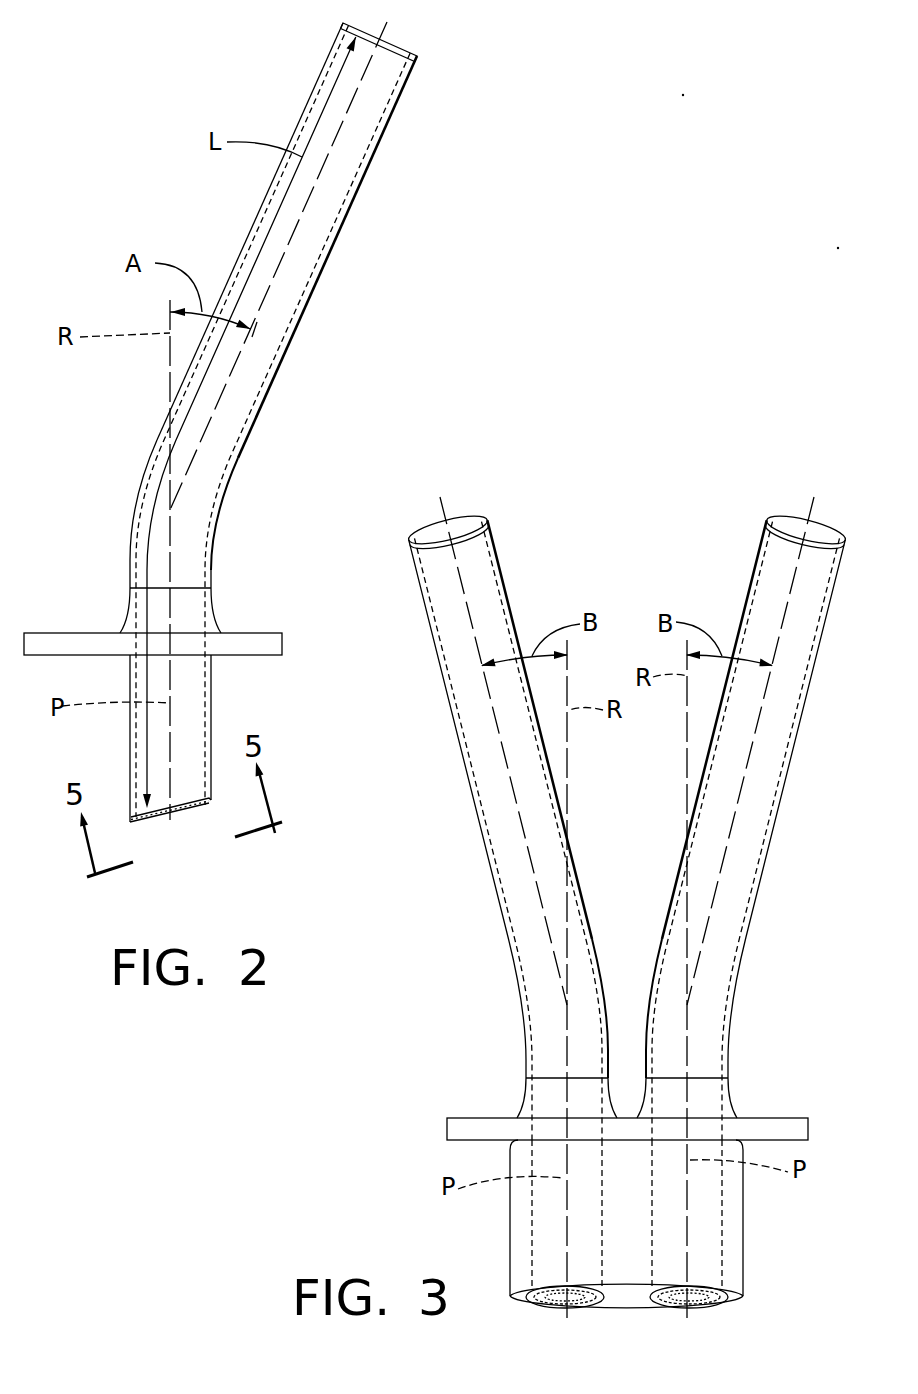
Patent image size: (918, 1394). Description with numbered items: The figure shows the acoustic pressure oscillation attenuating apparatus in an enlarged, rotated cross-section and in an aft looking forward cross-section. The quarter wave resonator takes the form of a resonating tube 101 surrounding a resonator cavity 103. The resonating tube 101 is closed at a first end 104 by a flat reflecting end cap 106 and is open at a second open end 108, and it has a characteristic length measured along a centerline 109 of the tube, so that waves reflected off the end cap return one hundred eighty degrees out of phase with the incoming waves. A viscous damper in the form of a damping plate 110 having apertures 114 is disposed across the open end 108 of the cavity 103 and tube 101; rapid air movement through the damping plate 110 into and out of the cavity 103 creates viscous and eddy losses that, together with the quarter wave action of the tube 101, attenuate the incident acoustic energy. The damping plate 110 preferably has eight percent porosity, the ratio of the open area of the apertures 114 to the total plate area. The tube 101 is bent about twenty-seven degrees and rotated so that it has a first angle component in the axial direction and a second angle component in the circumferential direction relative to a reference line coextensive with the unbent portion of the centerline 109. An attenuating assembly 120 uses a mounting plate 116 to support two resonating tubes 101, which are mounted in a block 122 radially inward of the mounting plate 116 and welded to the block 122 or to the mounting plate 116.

In FIG. 2, the resonating tube 101 is at (322, 284).
In FIG. 3, the resonating tube 101 is at (509, 606).
In FIG. 2, the resonator cavity 103 is at (190, 556).
In FIG. 2, the first end 104 is at (417, 57).
In FIG. 3, the first end 104 is at (464, 530).
In FIG. 2, the flat reflecting end cap 106 is at (388, 42).
In FIG. 3, the flat reflecting end cap 106 is at (434, 526).
In FIG. 2, the second open end 108 is at (210, 800).
In FIG. 3, the second open end 108 is at (518, 1247).
In FIG. 2, the centerline 109 is at (320, 176).
In FIG. 3, the centerline 109 is at (462, 583).
In FIG. 2, the damping plate 110 is at (157, 820).
In FIG. 3, the damping plate 110 is at (525, 1302).
In FIG. 2, the apertures 114 is at (188, 812).
In FIG. 2, the mounting plate 116 is at (38, 633).
In FIG. 3, the mounting plate 116 is at (765, 1118).
In FIG. 2, the attenuating assembly 120 is at (228, 707).
In FIG. 3, the attenuating assembly 120 is at (483, 1162).
In FIG. 3, the block 122 is at (630, 1218).